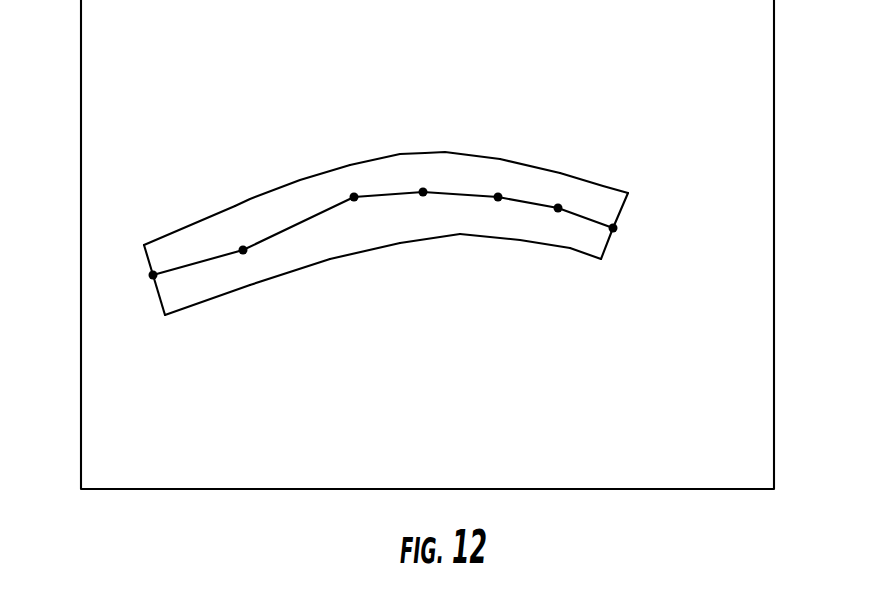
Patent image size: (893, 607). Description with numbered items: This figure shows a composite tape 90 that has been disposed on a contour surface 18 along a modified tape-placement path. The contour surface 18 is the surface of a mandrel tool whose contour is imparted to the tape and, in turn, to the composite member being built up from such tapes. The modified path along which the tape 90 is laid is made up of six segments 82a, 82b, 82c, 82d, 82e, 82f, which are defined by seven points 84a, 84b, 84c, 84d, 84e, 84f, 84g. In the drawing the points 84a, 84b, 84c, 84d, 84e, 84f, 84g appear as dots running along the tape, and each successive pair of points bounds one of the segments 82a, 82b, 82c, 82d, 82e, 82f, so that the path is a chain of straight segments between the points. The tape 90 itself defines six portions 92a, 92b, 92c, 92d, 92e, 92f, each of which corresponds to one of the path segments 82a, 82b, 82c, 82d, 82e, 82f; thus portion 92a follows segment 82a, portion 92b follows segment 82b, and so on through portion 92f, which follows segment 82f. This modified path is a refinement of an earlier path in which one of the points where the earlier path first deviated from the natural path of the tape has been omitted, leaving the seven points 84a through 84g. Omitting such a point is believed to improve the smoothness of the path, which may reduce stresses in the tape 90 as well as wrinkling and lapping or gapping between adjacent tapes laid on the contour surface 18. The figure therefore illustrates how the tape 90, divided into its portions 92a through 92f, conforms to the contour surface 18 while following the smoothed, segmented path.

The contour surface 18 is at (757, 345).
The tape 90 is at (128, 265).
The segment 82a is at (192, 265).
The segment 82b is at (302, 220).
The segment 82c is at (398, 192).
The segment 82d is at (467, 193).
The segment 82e is at (532, 203).
The segment 82f is at (587, 218).
The point 84a is at (153, 275).
The point 84b is at (243, 250).
The point 84c is at (354, 197).
The point 84d is at (423, 192).
The point 84e is at (498, 197).
The point 84f is at (558, 208).
The point 84g is at (613, 228).
The portion 92a is at (202, 287).
The portion 92b is at (293, 250).
The portion 92c is at (387, 218).
The portion 92d is at (458, 218).
The portion 92e is at (524, 228).
The portion 92f is at (588, 247).